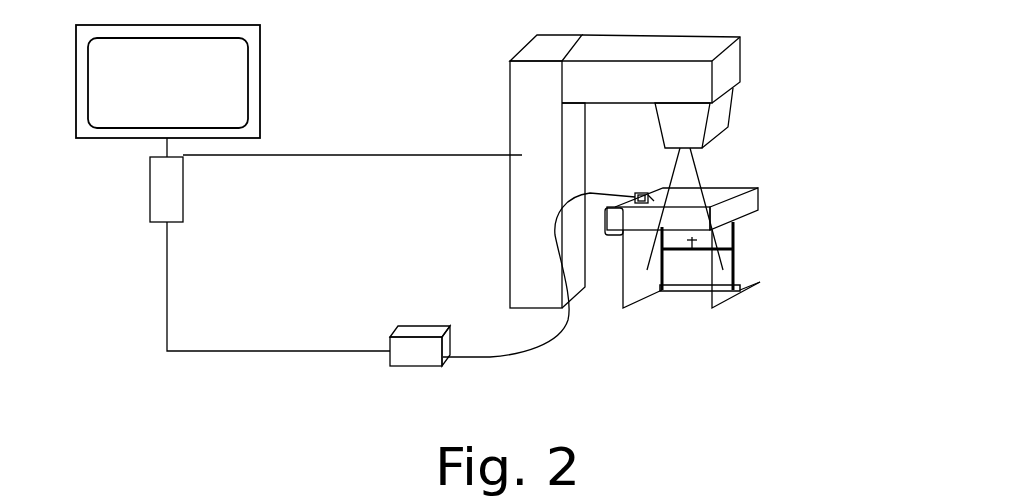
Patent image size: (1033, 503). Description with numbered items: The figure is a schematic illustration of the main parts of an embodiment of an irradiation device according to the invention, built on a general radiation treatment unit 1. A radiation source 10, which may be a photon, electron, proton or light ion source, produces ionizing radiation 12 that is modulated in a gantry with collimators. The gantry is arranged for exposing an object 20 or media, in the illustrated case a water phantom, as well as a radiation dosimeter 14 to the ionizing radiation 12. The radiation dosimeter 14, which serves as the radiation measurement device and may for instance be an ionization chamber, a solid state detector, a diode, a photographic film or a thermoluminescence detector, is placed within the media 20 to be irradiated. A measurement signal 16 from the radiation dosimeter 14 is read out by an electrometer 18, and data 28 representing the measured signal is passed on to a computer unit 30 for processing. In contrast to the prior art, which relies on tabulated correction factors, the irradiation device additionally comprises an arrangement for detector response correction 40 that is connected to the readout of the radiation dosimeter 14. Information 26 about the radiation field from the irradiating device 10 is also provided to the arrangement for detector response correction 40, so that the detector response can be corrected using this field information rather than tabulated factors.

The radiation treatment unit 1 is at (830, 275).
The radiation source 10 is at (520, 70).
The ionizing radiation 12 is at (688, 176).
The radiation dosimeter 14 is at (705, 250).
The measurement signal 16 is at (553, 345).
The electrometer 18 is at (430, 325).
The object 20 is at (743, 242).
The information about the radiation field 26 is at (327, 156).
The data representing the measured signal 28 is at (168, 244).
The computer unit 30 is at (255, 77).
The arrangement for detector response correction 40 is at (183, 172).